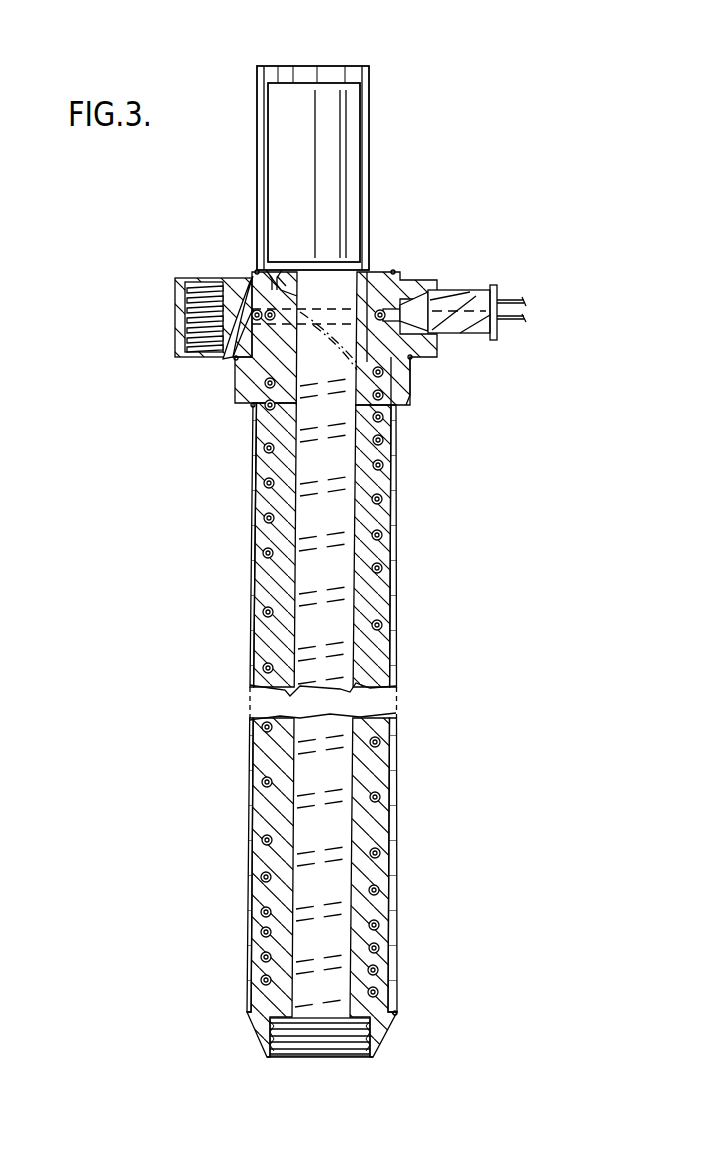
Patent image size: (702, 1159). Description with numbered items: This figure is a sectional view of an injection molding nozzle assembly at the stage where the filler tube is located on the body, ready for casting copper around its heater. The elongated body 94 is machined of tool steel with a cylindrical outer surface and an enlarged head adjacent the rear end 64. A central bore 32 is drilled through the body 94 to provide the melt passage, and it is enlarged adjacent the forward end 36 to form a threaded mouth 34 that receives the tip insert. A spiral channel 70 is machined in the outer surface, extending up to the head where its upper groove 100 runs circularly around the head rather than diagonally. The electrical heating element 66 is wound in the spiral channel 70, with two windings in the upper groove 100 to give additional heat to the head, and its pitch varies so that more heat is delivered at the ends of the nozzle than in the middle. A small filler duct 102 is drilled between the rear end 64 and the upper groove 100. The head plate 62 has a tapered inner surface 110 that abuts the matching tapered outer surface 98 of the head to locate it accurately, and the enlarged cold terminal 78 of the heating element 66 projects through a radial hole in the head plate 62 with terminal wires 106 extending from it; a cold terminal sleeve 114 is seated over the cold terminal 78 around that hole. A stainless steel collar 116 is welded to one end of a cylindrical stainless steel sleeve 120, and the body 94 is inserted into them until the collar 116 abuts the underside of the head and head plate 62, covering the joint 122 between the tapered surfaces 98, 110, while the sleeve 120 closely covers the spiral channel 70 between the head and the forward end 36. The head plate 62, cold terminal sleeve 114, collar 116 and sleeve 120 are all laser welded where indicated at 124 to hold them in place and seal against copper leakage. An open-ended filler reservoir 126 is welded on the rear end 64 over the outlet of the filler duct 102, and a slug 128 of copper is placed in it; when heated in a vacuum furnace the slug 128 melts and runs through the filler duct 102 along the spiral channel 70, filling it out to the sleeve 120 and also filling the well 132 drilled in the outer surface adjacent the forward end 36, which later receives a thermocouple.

The central bore 32 is at (343, 768).
The mouth 34 is at (303, 1058).
The forward end 36 is at (375, 1058).
The head plate 62 is at (180, 314).
The rear end 64 is at (397, 276).
The electrical heating element 66 is at (392, 576).
The spiral channel 70 is at (380, 625).
The cold terminal 78 is at (470, 292).
The elongated body 94 is at (395, 658).
The tapered outer surface 98 is at (243, 292).
The upper groove 100 is at (233, 359).
The filler duct 102 is at (290, 479).
The terminal wires 106 is at (504, 330).
The tapered inner surface 110 is at (238, 337).
The cold terminal sleeve 114 is at (472, 336).
The collar 116 is at (408, 400).
The sleeve 120 is at (395, 545).
The joint 122 is at (411, 360).
The laser welds 124 is at (257, 272).
The filler reservoir 126 is at (258, 128).
The slug 128 is at (328, 95).
The well 132 is at (262, 989).